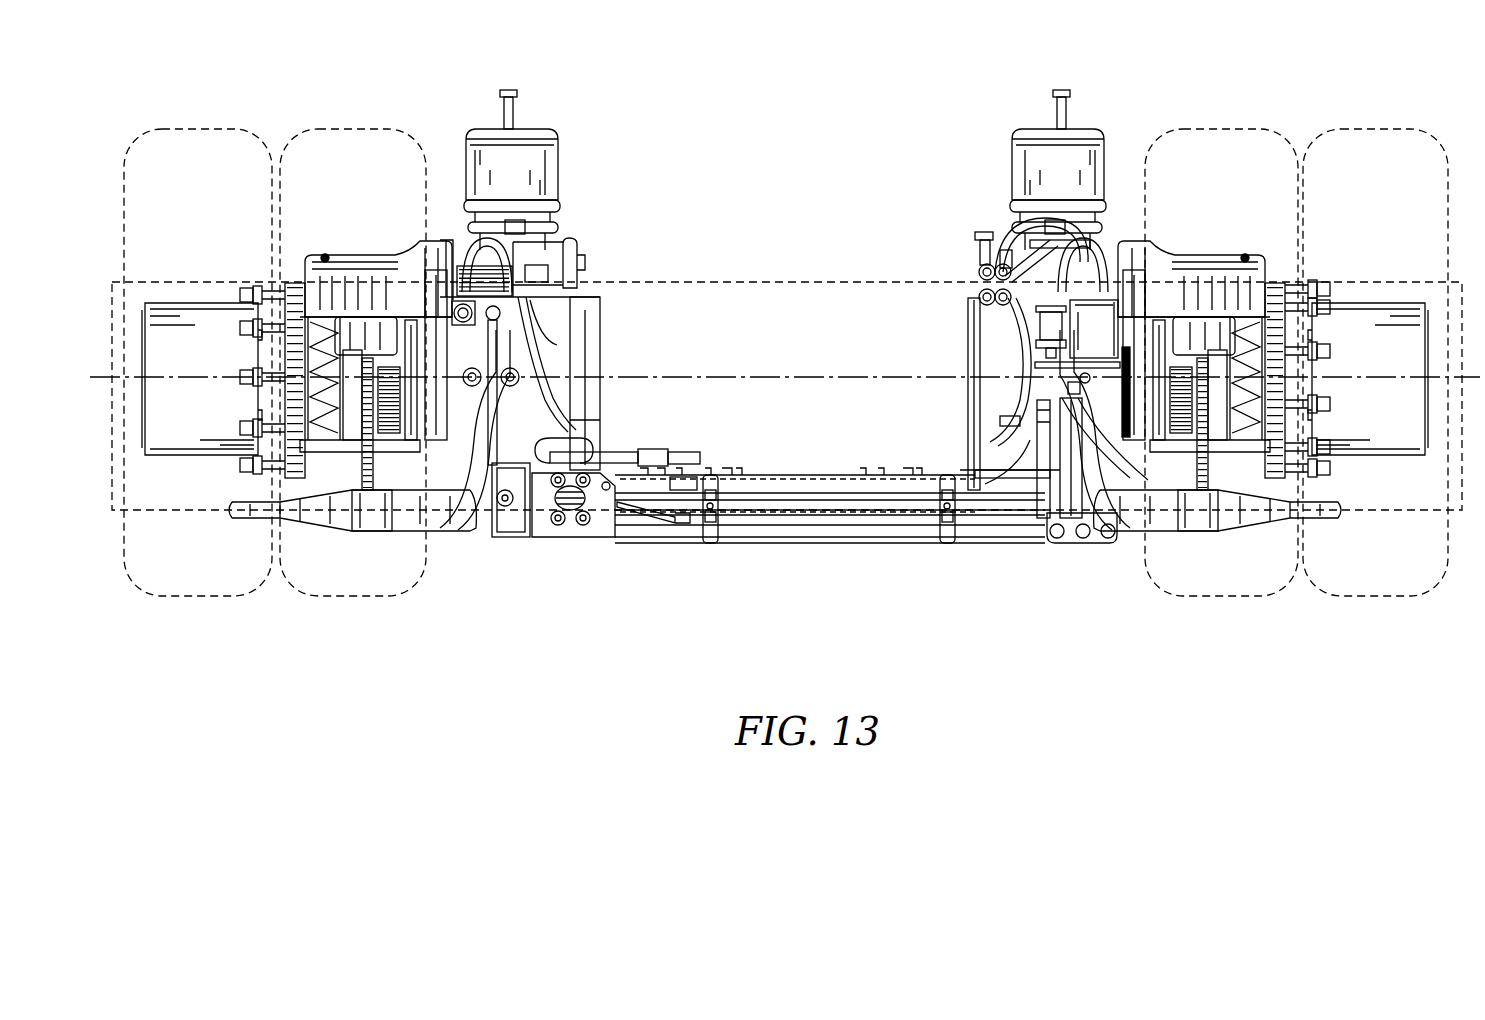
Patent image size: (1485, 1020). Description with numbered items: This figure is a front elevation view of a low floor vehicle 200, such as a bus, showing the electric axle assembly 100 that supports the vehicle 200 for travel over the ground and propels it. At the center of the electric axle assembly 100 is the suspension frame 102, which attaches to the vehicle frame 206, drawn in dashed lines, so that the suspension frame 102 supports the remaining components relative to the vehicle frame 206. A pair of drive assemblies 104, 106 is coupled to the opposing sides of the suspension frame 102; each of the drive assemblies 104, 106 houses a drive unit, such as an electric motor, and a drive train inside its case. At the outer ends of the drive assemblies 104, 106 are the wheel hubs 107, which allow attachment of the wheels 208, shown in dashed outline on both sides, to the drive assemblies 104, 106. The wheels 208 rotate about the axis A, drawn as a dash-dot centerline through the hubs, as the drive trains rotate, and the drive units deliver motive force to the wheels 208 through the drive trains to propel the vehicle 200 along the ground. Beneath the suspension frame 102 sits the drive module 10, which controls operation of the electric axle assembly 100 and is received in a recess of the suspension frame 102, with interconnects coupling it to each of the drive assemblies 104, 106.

The drive module 10 is at (908, 551).
The electric axle assembly 100 is at (654, 216).
The suspension frame 102 is at (700, 549).
The drive assembly 104 is at (578, 232).
The drive assembly 106 is at (966, 255).
The wheel hub 107 is at (212, 326).
The vehicle 200 is at (967, 118).
The vehicle frame 206 is at (810, 282).
The wheels 208 is at (318, 599).
The axis A is at (812, 378).